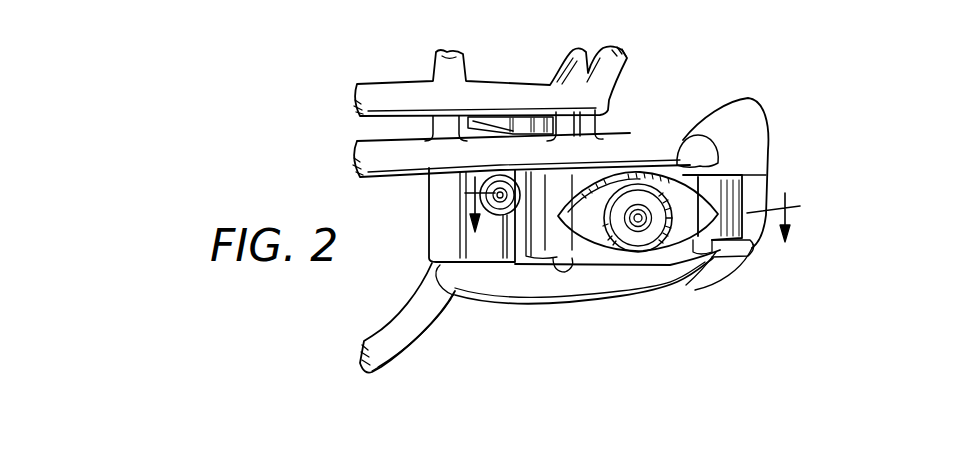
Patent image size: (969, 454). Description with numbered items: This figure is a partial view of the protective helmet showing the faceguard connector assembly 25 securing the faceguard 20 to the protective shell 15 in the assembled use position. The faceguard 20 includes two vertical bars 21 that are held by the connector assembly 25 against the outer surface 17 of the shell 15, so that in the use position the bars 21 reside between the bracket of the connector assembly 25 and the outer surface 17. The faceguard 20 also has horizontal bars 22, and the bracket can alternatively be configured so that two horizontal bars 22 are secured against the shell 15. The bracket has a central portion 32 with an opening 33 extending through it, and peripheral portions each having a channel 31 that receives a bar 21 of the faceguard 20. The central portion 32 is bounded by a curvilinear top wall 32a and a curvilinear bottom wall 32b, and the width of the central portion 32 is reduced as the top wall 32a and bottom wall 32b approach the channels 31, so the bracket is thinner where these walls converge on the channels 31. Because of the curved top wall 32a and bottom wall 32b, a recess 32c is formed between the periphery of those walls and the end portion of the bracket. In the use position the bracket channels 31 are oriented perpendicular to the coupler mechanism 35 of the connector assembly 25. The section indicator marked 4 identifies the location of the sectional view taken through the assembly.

The faceguard 20 is at (324, 119).
The protective shell 15 is at (637, 80).
The outer surface of the shell 17 is at (521, 155).
The horizontal bars 22 is at (603, 147).
The vertical bars 21 is at (717, 155).
The faceguard connector assembly 25 is at (790, 160).
The channel 31 is at (740, 150).
The central portion 32 is at (660, 152).
The curvilinear top wall 32a is at (627, 170).
The curvilinear bottom wall 32b is at (649, 252).
The recess 32c is at (680, 140).
The opening 33 is at (627, 253).
The coupler mechanism 35 is at (661, 222).
The section line 4- 4 is at (633, 209).